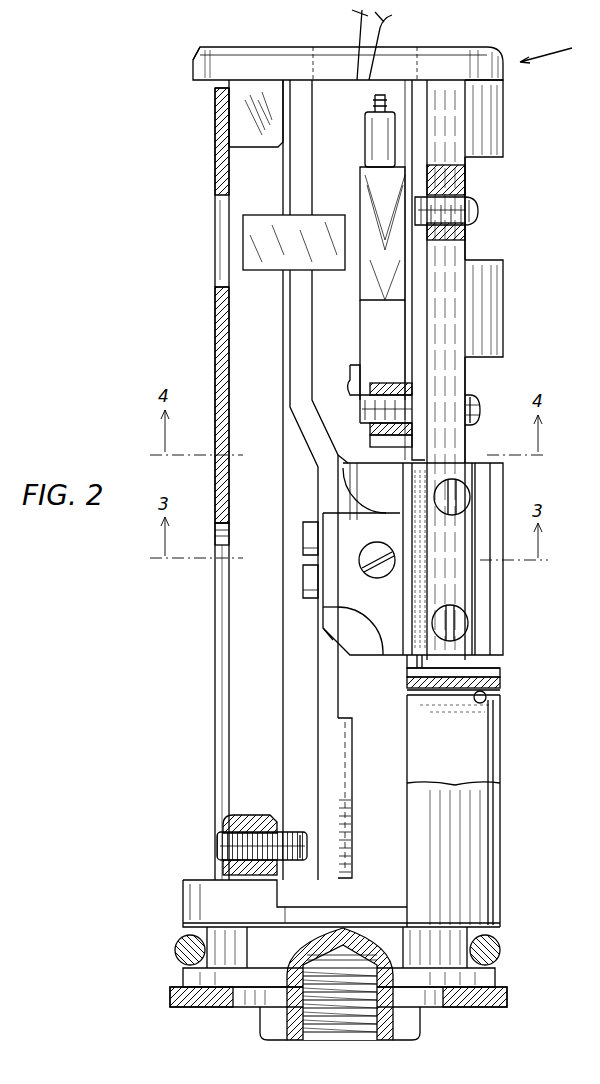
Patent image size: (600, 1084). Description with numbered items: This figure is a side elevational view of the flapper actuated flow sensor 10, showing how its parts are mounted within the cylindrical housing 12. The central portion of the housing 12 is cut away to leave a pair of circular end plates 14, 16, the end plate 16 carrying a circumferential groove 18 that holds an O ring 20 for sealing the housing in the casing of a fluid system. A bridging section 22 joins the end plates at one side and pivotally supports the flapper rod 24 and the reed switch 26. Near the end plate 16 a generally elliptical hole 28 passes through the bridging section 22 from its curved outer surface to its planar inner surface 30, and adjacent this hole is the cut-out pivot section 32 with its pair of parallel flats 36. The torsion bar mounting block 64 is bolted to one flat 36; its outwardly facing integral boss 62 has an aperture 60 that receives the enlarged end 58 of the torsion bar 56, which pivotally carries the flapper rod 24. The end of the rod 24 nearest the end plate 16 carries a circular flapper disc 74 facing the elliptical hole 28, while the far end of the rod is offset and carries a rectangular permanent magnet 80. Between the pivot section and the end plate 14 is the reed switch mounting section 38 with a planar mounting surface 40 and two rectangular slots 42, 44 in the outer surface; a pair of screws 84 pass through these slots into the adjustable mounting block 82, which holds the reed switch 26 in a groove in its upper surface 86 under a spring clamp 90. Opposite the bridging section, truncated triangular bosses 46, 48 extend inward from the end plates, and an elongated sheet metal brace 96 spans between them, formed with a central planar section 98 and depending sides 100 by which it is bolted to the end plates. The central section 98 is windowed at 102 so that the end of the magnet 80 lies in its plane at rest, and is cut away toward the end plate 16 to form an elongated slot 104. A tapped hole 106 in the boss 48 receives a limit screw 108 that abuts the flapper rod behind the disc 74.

The flapper actuated flow sensor 10 is at (557, 47).
The cylindrical housing 12 is at (511, 825).
The end plate 14 is at (205, 62).
The end plate 16 is at (193, 905).
The circumferential groove 18 is at (488, 930).
The O ring 20 is at (500, 950).
The bridging section 22 is at (487, 127).
The flapper rod 24 is at (330, 703).
The reed switch 26 is at (372, 128).
The elliptical hole 28 is at (486, 695).
The planar inner surface 30 is at (407, 720).
The cut-out pivot section 32 is at (488, 620).
The parallel flats 36 is at (490, 670).
The reed switch mounting section 38 is at (490, 324).
The planar mounting surface 40 is at (427, 135).
The rectangular slot 42 is at (480, 157).
The rectangular slot 44 is at (482, 357).
The truncated triangular boss 46 is at (268, 115).
The truncated triangular boss 48 is at (228, 818).
The torsion bar 56 is at (368, 620).
The enlarged end 58 is at (390, 553).
The aperture 60 is at (387, 473).
The integral boss 62 is at (365, 625).
The torsion bar mounting block 64 is at (475, 598).
The flapper disc 74 is at (353, 855).
The permanent magnet 80 is at (300, 232).
The adjustable mounting block 82 is at (405, 275).
The screws 84 is at (478, 210).
The upper surface 86 is at (378, 175).
The spring clamp 90 is at (357, 390).
The sheet metal brace 96 is at (212, 610).
The central planar section 98 is at (222, 322).
The depending sides 100 is at (240, 345).
The window 102 is at (218, 205).
The elongated slot 104 is at (218, 583).
The tapped hole 106 is at (232, 842).
The limit screw 108 is at (293, 835).